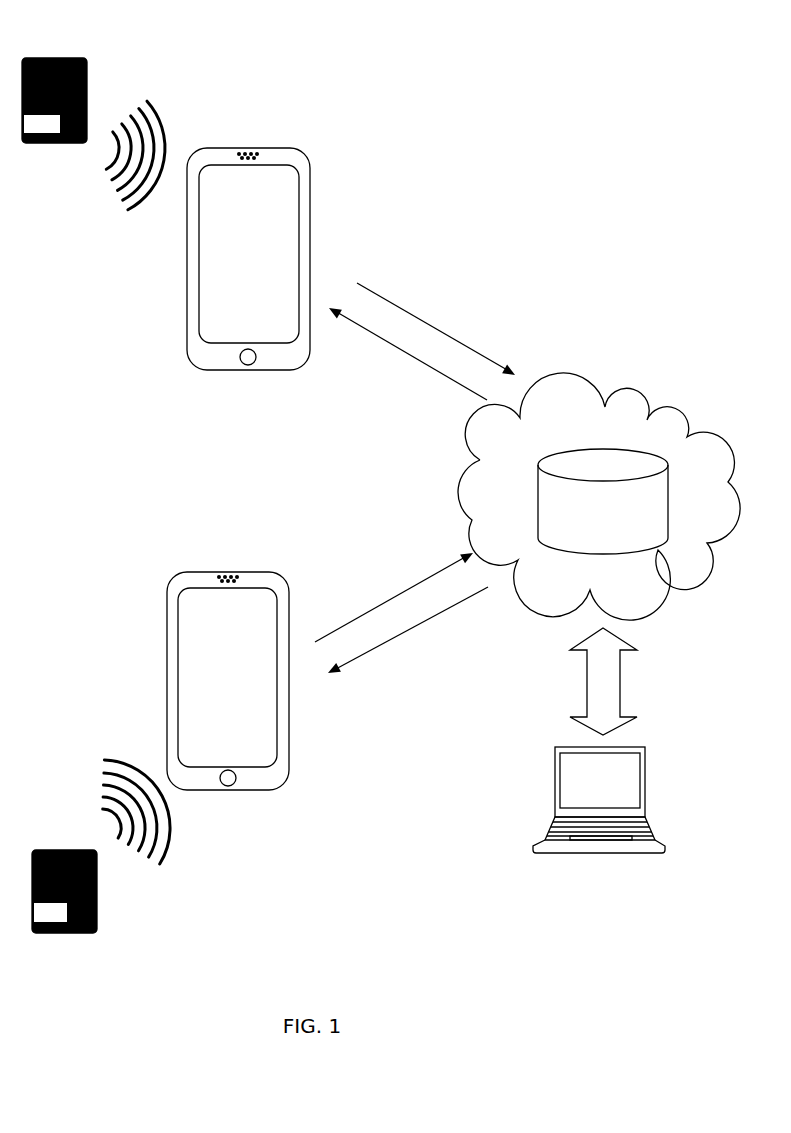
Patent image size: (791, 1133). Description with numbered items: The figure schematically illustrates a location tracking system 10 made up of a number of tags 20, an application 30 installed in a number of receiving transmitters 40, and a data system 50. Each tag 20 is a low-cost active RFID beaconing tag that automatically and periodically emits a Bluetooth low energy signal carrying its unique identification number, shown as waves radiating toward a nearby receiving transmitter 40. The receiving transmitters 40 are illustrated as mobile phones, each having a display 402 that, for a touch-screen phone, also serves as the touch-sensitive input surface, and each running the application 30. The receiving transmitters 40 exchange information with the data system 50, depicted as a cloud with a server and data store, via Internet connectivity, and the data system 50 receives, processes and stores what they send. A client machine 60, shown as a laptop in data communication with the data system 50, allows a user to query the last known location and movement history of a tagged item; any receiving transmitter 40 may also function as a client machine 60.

The location tracking system 10 is at (443, 130).
The tag 20 is at (57, 57).
The application 30 is at (277, 233).
The receiving transmitter 40 is at (242, 133).
The display 402 is at (205, 242).
The data system 50 is at (608, 368).
The client machine 60 is at (565, 775).